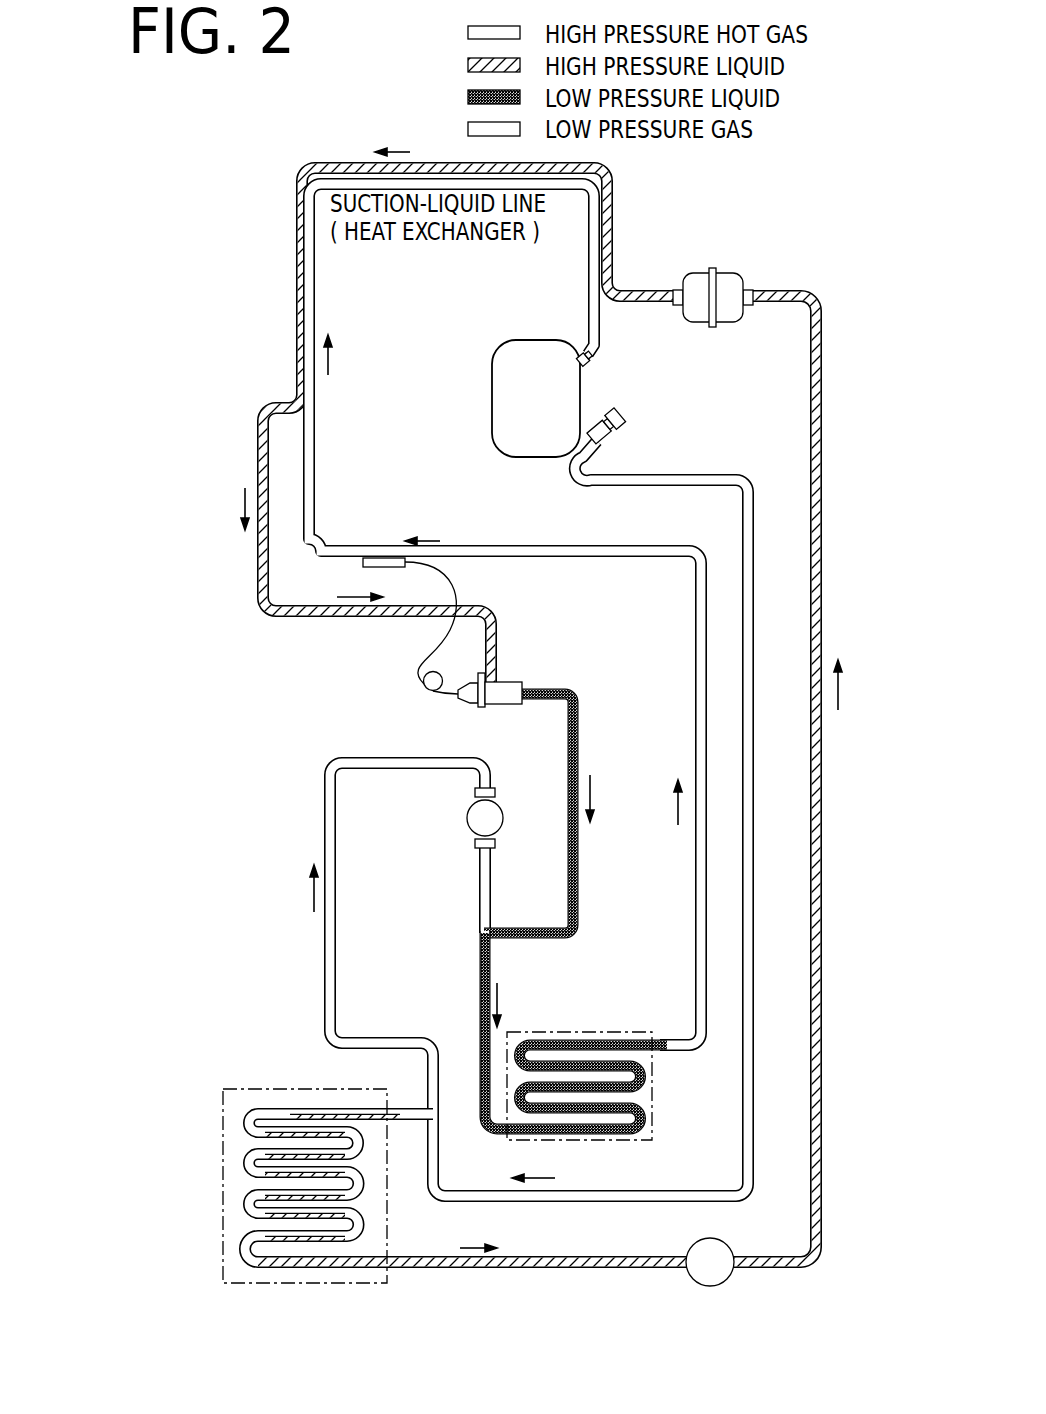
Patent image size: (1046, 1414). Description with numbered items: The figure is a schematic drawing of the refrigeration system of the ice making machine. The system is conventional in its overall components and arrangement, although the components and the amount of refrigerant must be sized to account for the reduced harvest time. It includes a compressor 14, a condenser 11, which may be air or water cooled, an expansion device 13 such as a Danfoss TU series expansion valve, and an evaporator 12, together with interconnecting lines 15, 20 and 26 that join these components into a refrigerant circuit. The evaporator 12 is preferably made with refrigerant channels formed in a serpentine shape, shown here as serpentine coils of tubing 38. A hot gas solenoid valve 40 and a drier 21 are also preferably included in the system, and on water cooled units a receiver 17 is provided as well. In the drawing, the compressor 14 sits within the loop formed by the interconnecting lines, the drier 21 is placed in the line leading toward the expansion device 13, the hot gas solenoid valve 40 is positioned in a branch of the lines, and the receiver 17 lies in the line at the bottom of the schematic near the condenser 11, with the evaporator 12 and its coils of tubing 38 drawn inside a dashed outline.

The condenser 11 is at (218, 1126).
The evaporator 12 is at (662, 1028).
The expansion device 13 is at (505, 680).
The compressor 14 is at (486, 400).
The interconnecting line 15 is at (325, 972).
The receiver 17 is at (730, 1283).
The interconnecting line 20 is at (826, 1118).
The drier 21 is at (760, 270).
The interconnecting line 26 is at (758, 535).
The serpentine coils of tubing 38 is at (640, 1112).
The hot gas solenoid valve 40 is at (504, 838).